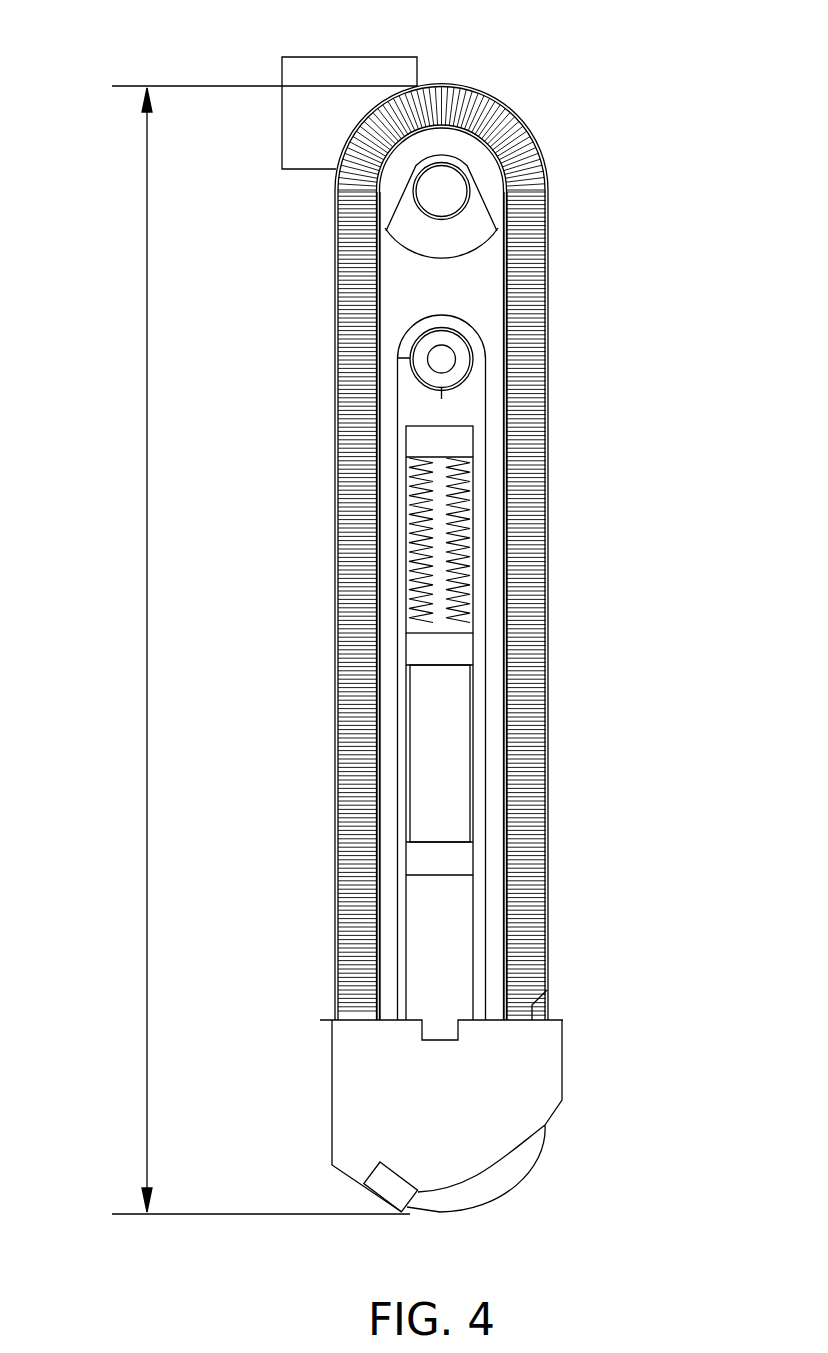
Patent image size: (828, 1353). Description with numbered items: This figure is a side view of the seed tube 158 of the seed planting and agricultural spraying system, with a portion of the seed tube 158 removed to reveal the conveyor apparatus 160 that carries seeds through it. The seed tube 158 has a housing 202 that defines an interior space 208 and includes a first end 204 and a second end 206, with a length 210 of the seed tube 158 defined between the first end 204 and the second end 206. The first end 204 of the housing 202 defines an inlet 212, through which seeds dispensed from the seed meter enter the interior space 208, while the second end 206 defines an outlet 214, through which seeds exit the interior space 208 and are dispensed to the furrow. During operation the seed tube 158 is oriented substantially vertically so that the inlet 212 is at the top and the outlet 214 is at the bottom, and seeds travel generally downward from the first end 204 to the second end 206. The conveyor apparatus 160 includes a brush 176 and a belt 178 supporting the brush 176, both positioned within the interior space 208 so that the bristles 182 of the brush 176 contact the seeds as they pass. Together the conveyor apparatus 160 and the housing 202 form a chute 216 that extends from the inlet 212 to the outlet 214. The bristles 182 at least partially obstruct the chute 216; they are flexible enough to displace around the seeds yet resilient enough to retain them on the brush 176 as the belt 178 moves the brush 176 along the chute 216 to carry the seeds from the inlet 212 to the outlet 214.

The seed tube 158 is at (590, 82).
The conveyor apparatus 160 is at (510, 150).
The brush 176 is at (325, 548).
The belt 178 is at (365, 712).
The bristles 182 is at (358, 614).
The housing 202 is at (336, 246).
The first end 204 is at (427, 90).
The second end 206 is at (452, 1212).
The interior space 208 is at (528, 358).
The length 210 is at (147, 692).
The inlet 212 is at (476, 86).
The outlet 214 is at (425, 1236).
The chute 216 is at (345, 343).